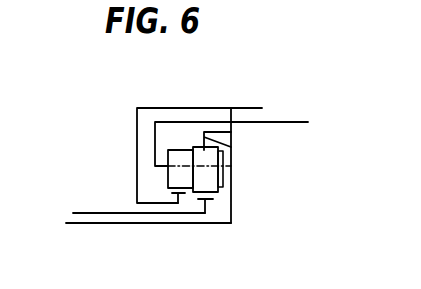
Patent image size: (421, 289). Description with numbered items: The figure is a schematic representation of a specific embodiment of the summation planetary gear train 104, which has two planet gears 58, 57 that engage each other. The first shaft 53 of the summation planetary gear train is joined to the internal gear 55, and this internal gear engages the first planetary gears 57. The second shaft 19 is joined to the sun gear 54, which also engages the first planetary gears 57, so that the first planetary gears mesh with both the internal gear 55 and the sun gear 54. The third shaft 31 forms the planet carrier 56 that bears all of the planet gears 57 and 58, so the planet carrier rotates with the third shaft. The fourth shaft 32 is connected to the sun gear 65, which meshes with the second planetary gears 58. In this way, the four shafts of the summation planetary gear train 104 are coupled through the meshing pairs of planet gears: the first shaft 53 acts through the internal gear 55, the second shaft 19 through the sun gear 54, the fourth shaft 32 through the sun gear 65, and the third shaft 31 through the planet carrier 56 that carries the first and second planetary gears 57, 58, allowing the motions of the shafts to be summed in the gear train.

The summation planetary gear train 104 is at (216, 103).
The fourth shaft 32 is at (248, 106).
The third shaft 31 is at (275, 121).
The planet carrier 56 is at (155, 150).
The second planetary gear 58 is at (181, 150).
The first planetary gear 57 is at (203, 158).
The internal gear 55 is at (231, 147).
The second shaft 19 is at (119, 212).
The first shaft 53 is at (123, 223).
The sun gear 65 is at (178, 203).
The sun gear 54 is at (205, 213).